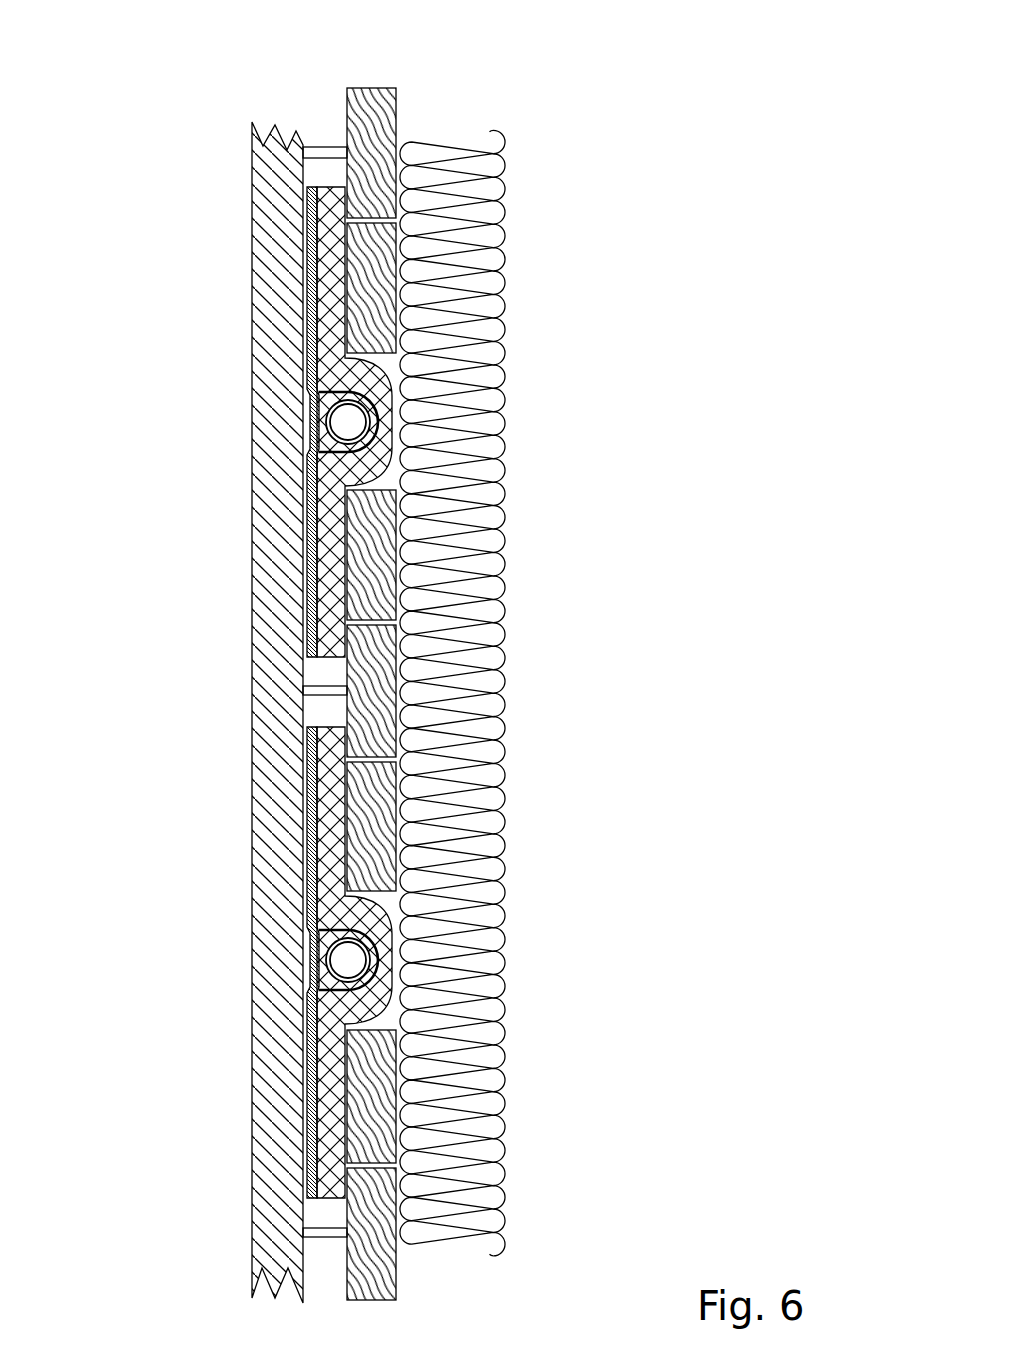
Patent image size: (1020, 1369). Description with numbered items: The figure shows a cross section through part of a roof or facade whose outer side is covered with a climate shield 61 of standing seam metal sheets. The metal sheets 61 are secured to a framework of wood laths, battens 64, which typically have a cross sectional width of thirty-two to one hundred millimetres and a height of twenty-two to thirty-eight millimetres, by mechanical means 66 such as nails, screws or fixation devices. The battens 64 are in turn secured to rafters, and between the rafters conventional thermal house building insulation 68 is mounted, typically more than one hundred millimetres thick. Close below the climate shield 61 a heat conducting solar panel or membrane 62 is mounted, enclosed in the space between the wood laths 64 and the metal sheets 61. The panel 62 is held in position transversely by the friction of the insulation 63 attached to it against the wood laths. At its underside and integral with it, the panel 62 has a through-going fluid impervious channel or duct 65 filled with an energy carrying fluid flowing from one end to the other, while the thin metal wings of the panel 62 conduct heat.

The climate shield 61 is at (265, 282).
The heat conducting solar panel 62 is at (328, 530).
The insulation 63 is at (368, 444).
The battens 64 is at (390, 113).
The channel or duct 65 is at (358, 397).
The mechanical means 66 is at (332, 140).
The thermal house building insulation 68 is at (470, 760).